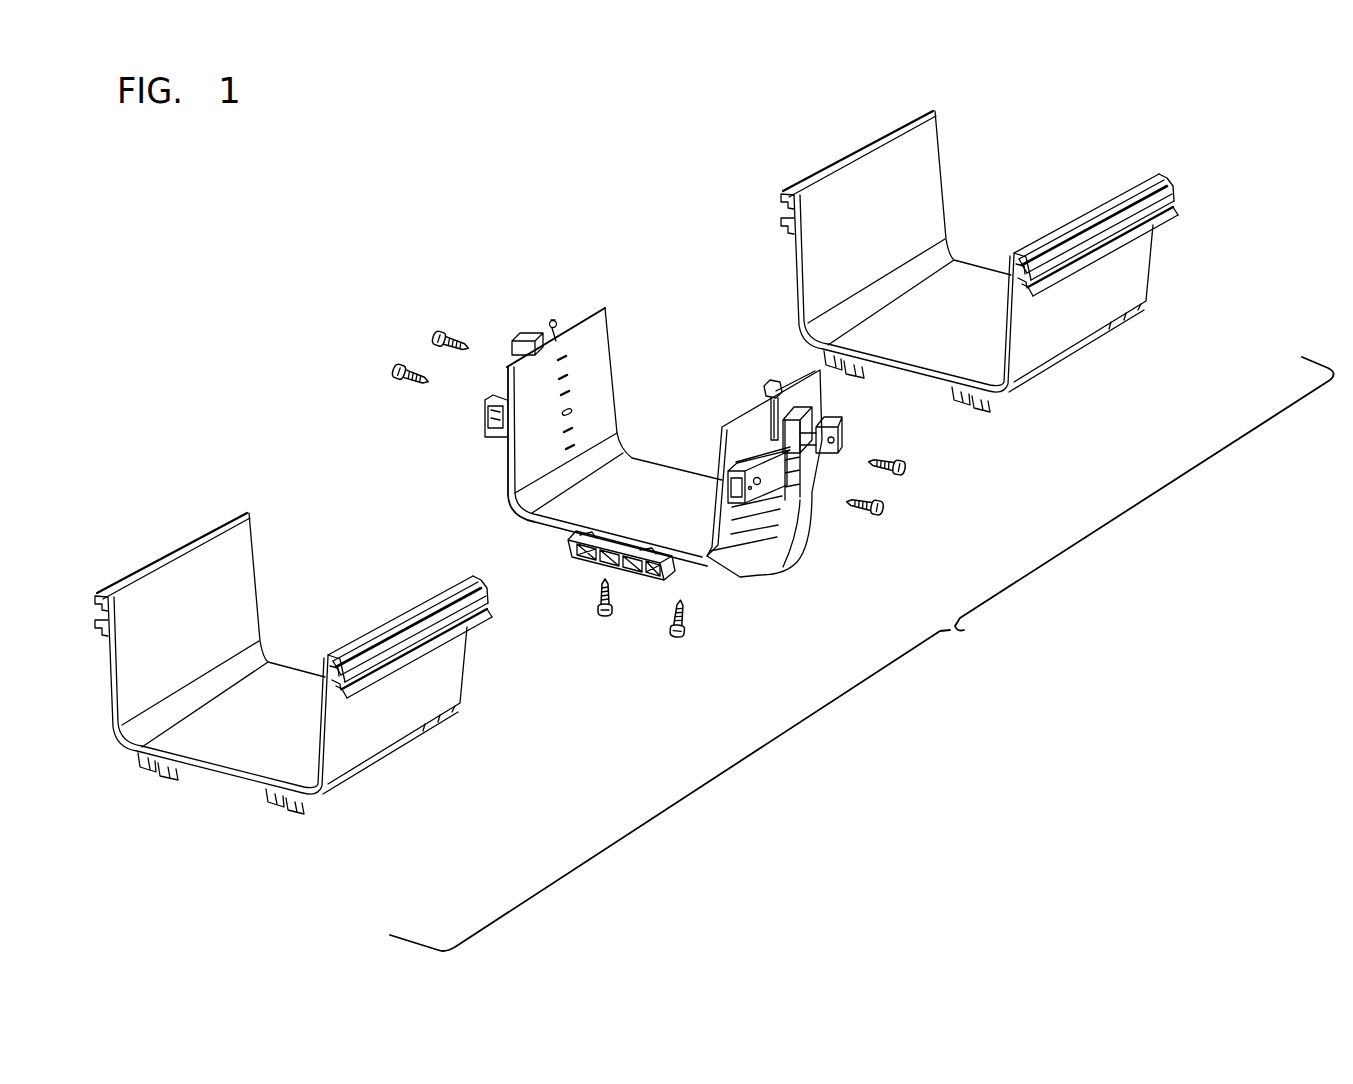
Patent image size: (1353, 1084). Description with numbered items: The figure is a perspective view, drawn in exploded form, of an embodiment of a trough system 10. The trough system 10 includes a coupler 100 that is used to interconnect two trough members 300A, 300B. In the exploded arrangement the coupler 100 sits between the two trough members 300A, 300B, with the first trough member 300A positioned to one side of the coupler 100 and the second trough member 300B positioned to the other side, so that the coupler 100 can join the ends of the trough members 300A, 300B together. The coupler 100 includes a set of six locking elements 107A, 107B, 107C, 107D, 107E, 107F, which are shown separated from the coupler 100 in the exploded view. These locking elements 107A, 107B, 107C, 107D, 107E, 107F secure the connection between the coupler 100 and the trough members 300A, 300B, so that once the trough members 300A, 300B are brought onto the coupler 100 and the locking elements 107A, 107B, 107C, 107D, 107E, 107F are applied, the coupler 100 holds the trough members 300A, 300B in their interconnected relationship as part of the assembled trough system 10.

The trough system 10 is at (862, 654).
The coupler 100 is at (535, 272).
The locking element 107A is at (889, 458).
The locking element 107B is at (872, 516).
The locking element 107C is at (685, 620).
The locking element 107D is at (601, 603).
The locking element 107E is at (409, 379).
The locking element 107F is at (439, 329).
The trough member 300A is at (1056, 134).
The trough member 300B is at (104, 545).